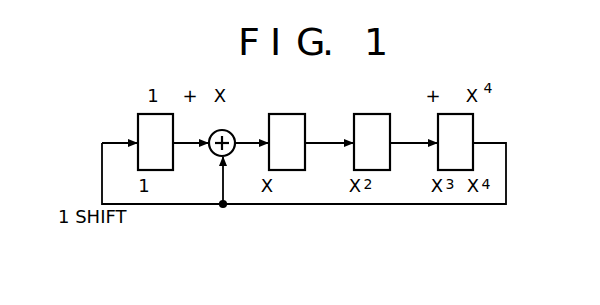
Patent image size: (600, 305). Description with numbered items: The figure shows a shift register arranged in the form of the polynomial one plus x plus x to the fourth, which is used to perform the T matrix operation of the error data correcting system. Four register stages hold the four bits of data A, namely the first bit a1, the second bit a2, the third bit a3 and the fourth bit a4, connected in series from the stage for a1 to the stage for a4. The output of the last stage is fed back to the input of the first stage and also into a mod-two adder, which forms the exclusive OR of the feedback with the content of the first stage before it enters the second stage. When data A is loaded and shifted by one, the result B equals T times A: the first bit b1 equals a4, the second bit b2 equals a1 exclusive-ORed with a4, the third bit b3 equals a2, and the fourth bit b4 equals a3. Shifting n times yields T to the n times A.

The first bit of data A a1 is at (155, 142).
The second bit of data A a2 is at (287, 142).
The third bit of data A a3 is at (372, 142).
The fourth bit of data A a4 is at (455, 142).
The first bit of data B b1 is at (154, 251).
The second bit of data B b2 is at (284, 251).
The third bit of data B b3 is at (372, 251).
The fourth bit of data B b4 is at (457, 251).